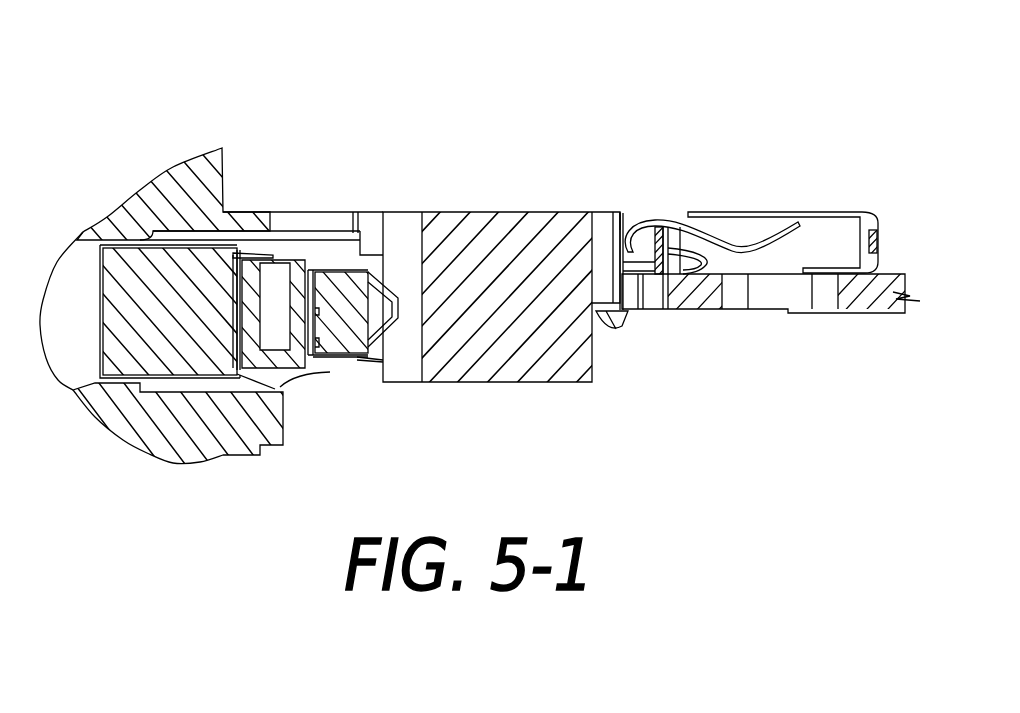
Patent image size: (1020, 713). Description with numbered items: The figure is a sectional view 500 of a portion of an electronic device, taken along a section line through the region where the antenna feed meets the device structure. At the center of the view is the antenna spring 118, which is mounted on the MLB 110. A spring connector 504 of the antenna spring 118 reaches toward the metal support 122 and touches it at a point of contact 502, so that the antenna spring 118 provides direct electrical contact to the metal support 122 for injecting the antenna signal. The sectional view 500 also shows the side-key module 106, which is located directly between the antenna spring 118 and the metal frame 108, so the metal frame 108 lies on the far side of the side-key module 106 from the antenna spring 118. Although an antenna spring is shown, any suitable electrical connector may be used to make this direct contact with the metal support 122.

The sectional view 500 is at (108, 30).
The metal frame 108 is at (182, 172).
The side-key module 106 is at (328, 357).
The metal support 122 is at (620, 192).
The MLB 110 is at (688, 312).
The spring connector 504 is at (668, 218).
The antenna spring 118 is at (797, 210).
The point of contact 502 is at (634, 203).